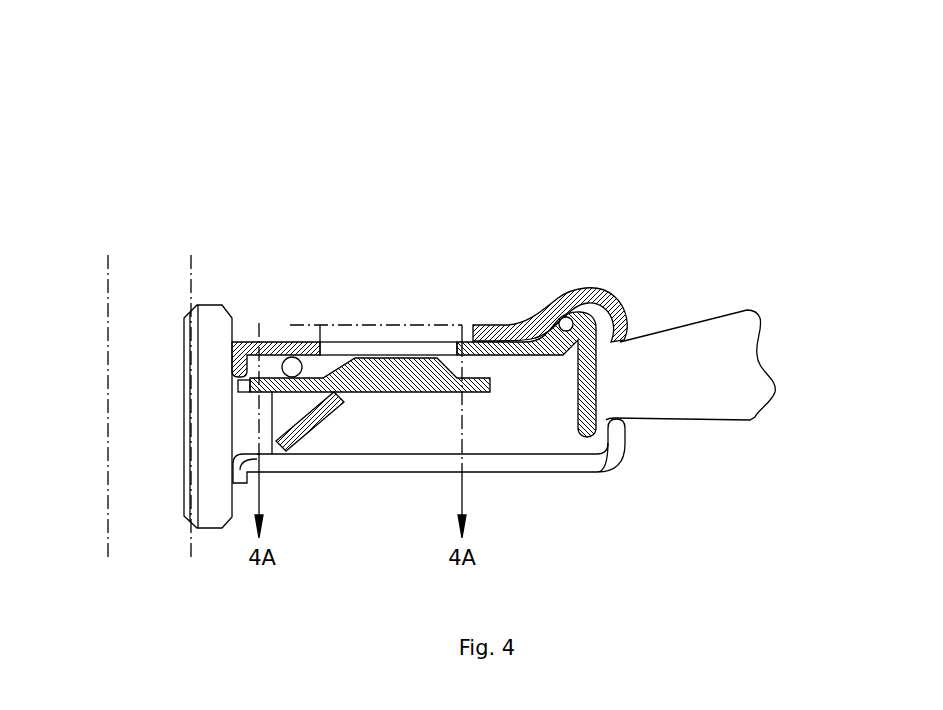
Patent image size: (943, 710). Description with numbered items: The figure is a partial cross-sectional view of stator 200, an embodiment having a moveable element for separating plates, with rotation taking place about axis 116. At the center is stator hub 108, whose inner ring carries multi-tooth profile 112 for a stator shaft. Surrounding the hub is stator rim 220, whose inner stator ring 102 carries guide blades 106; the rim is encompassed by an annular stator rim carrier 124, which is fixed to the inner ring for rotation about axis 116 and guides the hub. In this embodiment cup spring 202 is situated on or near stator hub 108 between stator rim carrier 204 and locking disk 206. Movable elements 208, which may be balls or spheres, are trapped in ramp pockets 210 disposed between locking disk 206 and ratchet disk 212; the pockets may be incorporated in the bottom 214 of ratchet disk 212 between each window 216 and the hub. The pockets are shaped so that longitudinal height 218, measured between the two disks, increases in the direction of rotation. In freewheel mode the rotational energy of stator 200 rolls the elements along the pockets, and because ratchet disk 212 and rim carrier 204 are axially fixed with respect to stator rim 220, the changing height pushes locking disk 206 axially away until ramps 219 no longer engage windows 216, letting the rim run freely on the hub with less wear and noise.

The stator 200 is at (601, 130).
The stator rim 220 is at (767, 222).
The stator rim carrier 124 is at (557, 298).
The inner stator ring 102 is at (587, 313).
The guide blades 106 is at (702, 345).
The axis 116 is at (108, 325).
The ratchet disk 212 is at (287, 342).
The ramps 219 is at (390, 355).
The window 216 is at (413, 345).
The movable elements 208 is at (257, 323).
The locking disk 206 is at (324, 366).
The ramp pockets 210 is at (262, 372).
The longitudinal height 218 is at (327, 402).
The bottom 214 is at (256, 380).
The cup spring 202 is at (293, 454).
The stator rim carrier 204 is at (540, 468).
The multi-tooth profile 112 is at (183, 507).
The stator hub 108 is at (222, 472).